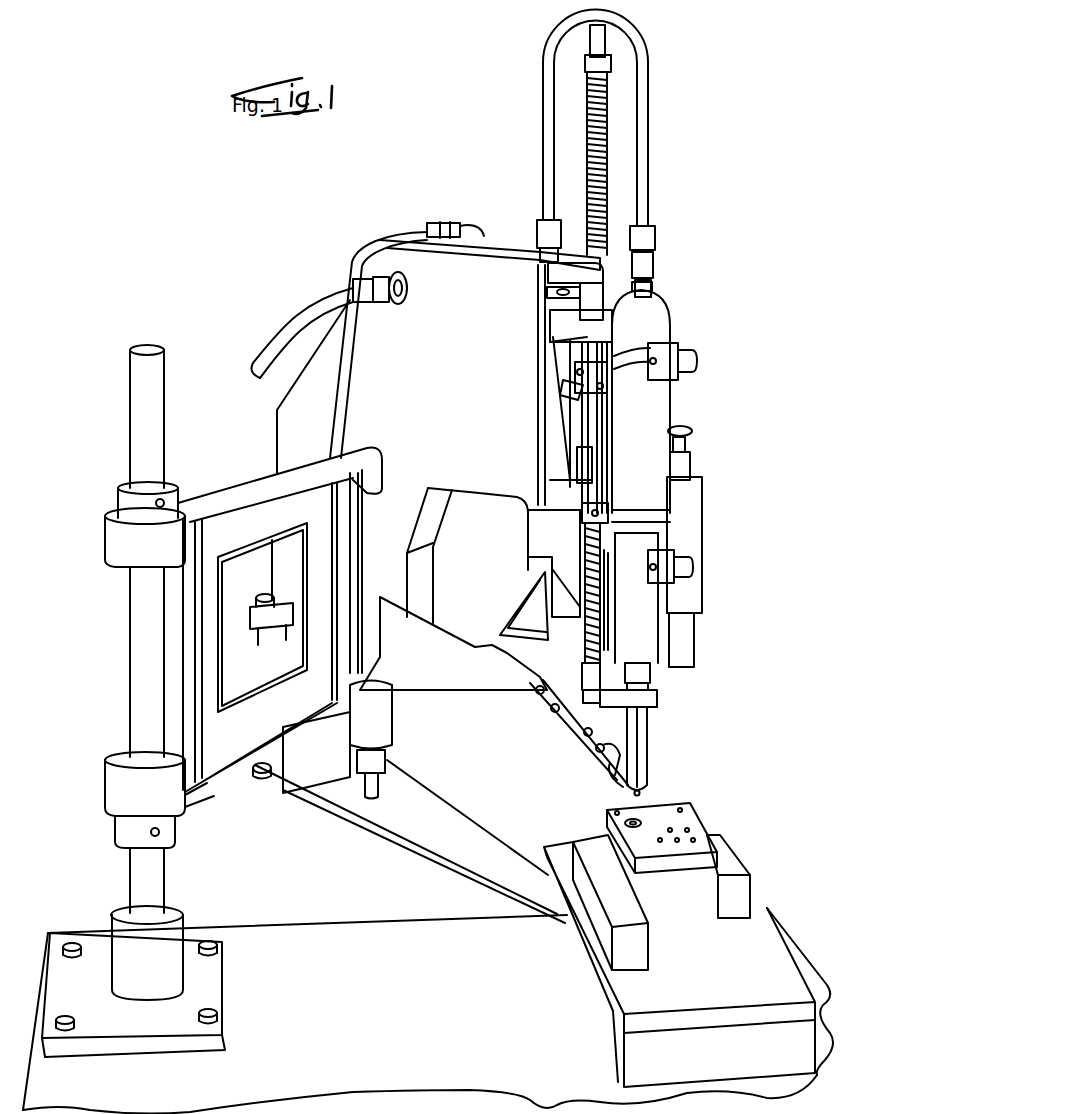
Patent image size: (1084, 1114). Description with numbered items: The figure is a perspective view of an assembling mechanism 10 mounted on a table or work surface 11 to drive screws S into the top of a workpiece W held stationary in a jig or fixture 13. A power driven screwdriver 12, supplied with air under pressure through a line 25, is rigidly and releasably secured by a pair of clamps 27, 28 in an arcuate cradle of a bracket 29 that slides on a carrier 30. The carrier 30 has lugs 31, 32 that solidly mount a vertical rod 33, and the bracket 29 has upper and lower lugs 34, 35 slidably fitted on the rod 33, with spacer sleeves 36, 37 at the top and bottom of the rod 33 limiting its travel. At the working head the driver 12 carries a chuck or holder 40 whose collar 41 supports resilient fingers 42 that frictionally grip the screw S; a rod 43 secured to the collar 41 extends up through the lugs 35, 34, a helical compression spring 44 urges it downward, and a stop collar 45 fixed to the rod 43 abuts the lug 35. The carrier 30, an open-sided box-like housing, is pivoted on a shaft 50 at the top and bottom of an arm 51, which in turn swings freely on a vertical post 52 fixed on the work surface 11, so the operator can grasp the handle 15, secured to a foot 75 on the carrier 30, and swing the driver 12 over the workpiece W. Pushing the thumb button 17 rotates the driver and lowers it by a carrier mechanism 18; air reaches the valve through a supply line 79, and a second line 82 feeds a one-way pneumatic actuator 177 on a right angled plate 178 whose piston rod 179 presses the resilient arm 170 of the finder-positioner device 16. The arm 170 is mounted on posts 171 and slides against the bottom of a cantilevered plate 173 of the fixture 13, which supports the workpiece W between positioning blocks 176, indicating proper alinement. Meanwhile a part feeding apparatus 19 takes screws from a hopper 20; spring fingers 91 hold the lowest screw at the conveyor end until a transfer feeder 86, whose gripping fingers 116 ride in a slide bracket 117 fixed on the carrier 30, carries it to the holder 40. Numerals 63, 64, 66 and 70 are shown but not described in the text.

The assembling mechanism 10 is at (711, 364).
The table or work surface 11 is at (336, 930).
The power driven screwdriver 12 is at (671, 410).
The jig or fixture 13 is at (755, 903).
The handle 15 is at (700, 523).
The finder-positioner device 16 is at (458, 796).
The thumb button 17 is at (685, 423).
The carrier mechanism 18 is at (567, 542).
The part feeding apparatus 19 is at (577, 750).
The hopper 20 is at (460, 655).
The air line 25 is at (647, 88).
The clamp 27 is at (680, 350).
The clamp 28 is at (676, 573).
The bracket 29 is at (618, 438).
The carrier 30 is at (493, 243).
The lug 31 is at (603, 270).
The lug 32 is at (552, 500).
The vertical rod 33 is at (607, 455).
The upper lug 34 is at (558, 323).
The lower lug 35 is at (580, 613).
The spacer sleeve 36 is at (603, 293).
The spacer sleeve 37 is at (577, 462).
The chuck or holder 40 is at (670, 711).
The collar 41 is at (648, 707).
The resilient fingers 42 is at (647, 745).
The rod 43 is at (597, 603).
The helical compression spring 44 is at (607, 625).
The stop collar 45 is at (608, 512).
The shaft 50 is at (362, 562).
The arm 51 is at (262, 480).
The vertical post 52 is at (130, 683).
The rod 63 is at (595, 42).
The nut 64 is at (558, 290).
The threaded screw 66 is at (588, 147).
The nut 70 is at (595, 68).
The foot 75 is at (690, 625).
The supply line 79 is at (300, 322).
The pneumatic line 82 is at (420, 228).
The transfer device or feeder 86 is at (599, 776).
The spring fingers 91 is at (580, 730).
The gripping fingers 116 is at (606, 772).
The slide bracket 117 is at (540, 695).
The resilient arm 170 is at (428, 842).
The posts 171 is at (262, 669).
The cantilevered plate 173 is at (590, 953).
The positioning blocks 176 is at (588, 842).
The one-way pneumatic actuator 177 is at (387, 722).
The right angled plate 178 is at (387, 760).
The piston rod 179 is at (375, 793).
The screw S is at (645, 793).
The workpiece W is at (730, 802).